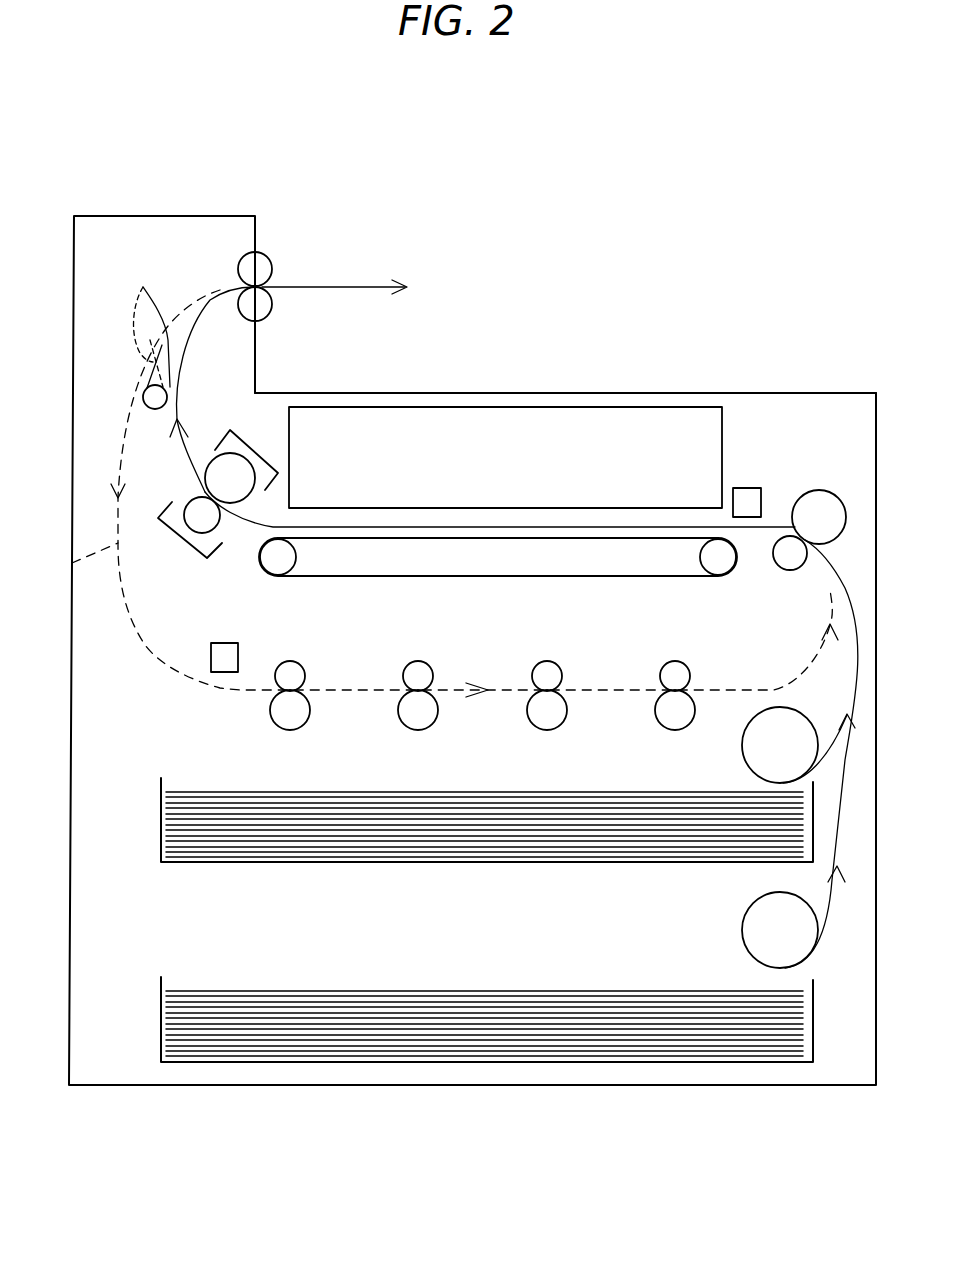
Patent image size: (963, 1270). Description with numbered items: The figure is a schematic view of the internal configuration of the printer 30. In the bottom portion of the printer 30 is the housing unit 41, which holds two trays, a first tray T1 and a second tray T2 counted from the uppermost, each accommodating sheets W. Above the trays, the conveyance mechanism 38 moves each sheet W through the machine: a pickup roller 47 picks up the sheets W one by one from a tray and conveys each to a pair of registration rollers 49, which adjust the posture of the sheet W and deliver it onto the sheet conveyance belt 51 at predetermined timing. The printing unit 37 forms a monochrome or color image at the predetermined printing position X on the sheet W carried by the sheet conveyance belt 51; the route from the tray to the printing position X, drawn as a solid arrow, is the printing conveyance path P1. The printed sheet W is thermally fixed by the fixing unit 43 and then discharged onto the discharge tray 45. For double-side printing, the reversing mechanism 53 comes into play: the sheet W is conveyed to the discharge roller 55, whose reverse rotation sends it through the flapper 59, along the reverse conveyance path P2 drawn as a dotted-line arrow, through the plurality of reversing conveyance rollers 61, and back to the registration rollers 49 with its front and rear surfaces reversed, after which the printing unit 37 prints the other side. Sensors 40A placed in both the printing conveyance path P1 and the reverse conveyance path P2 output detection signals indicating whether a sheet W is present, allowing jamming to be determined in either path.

The printer 30 is at (523, 226).
The printing unit 37 is at (628, 417).
The conveyance mechanism 38 is at (175, 676).
The sensor 40A is at (228, 655).
The housing unit 41 is at (82, 952).
The fixing unit 43 is at (180, 543).
The discharge tray 45 is at (548, 393).
The pickup roller 47 is at (767, 753).
The registration rollers 49 is at (787, 550).
The sheet conveyance belt 51 is at (592, 567).
The reversing mechanism 53 is at (121, 599).
The discharge roller 55 is at (264, 307).
The flapper 59 is at (151, 333).
The reversing conveyance rollers 61 is at (274, 707).
The printing conveyance path P1 is at (600, 526).
The reverse conveyance path P2 is at (63, 571).
The first tray T1 is at (160, 817).
The second tray T2 is at (160, 1013).
The sheet W is at (362, 805).
The printing position X is at (524, 520).